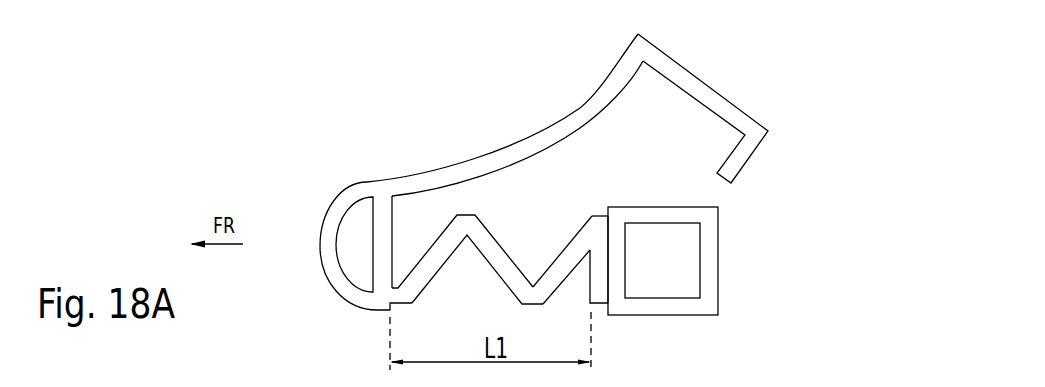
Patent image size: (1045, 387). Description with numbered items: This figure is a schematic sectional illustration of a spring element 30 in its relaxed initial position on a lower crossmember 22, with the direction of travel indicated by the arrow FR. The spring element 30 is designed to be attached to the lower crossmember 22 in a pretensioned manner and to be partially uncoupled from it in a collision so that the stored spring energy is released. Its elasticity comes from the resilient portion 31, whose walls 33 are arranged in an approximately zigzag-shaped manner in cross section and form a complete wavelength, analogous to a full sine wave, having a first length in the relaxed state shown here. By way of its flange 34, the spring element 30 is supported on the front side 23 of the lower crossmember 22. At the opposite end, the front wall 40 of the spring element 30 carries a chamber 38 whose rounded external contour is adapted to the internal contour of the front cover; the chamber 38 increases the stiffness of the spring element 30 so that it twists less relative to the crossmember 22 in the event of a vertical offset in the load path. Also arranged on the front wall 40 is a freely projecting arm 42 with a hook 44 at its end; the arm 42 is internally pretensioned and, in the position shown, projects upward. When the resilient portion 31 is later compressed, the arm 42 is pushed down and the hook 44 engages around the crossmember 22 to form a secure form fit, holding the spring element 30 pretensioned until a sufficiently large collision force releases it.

The spring element 30 is at (500, 108).
The resilient portion 31 is at (437, 295).
The walls 33 is at (563, 283).
The flange 34 is at (600, 306).
The chamber 38 is at (328, 280).
The front wall 40 is at (383, 203).
The arm 42 is at (580, 108).
The hook 44 is at (703, 80).
The lower crossmember 22 is at (720, 262).
The front side 23 is at (608, 272).